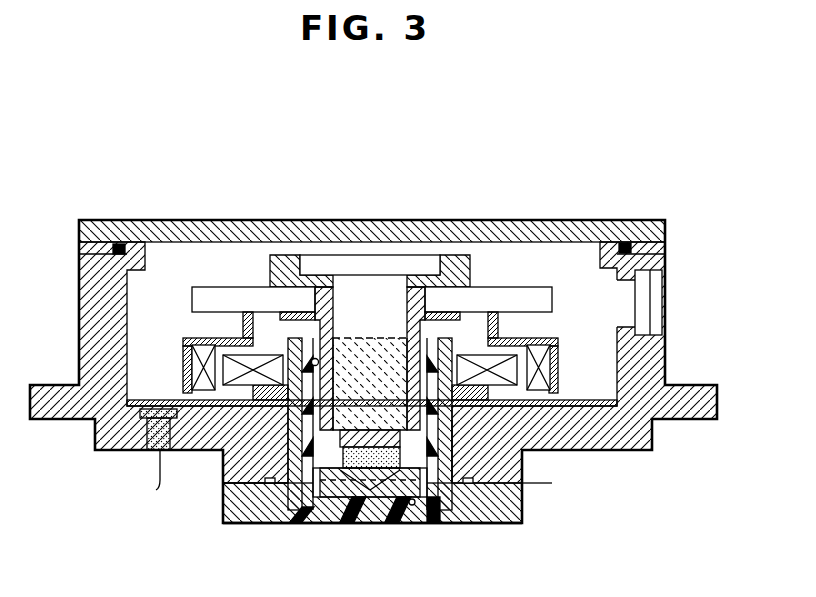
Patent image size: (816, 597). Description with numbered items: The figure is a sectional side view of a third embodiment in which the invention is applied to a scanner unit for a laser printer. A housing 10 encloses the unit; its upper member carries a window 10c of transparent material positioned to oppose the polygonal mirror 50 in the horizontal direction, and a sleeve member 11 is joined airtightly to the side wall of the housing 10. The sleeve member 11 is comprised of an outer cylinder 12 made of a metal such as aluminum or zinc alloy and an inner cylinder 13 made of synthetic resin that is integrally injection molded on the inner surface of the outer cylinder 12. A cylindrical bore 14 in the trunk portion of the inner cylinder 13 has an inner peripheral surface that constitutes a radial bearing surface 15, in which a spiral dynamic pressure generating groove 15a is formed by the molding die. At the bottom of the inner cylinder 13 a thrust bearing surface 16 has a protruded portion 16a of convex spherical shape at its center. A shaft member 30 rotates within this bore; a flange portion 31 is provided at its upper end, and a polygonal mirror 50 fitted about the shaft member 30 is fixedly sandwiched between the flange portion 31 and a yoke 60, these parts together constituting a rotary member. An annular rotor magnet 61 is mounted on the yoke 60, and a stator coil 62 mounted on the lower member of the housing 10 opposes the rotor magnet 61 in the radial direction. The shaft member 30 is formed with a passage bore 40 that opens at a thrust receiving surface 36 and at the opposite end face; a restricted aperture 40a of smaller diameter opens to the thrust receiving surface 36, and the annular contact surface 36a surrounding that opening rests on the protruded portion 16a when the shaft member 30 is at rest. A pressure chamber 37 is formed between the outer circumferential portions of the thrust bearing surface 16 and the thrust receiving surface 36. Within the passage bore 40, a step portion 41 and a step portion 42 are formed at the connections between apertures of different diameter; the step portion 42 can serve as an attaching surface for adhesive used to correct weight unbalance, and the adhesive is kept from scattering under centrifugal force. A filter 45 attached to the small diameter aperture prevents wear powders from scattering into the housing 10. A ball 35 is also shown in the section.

The housing 10 is at (169, 215).
The window 10c is at (643, 302).
The sleeve member 11 is at (575, 461).
The outer cylinder 12 is at (500, 448).
The inner cylinder 13 is at (503, 478).
The cylindrical bore 14 is at (427, 368).
The radial bearing surface 15 is at (280, 428).
The dynamic pressure generating groove 15a is at (282, 462).
The thrust bearing surface 16 is at (420, 497).
The protruded portion 16a is at (367, 497).
The shaft member 30 is at (351, 244).
The flange portion 31 is at (282, 262).
The ball 35 is at (320, 363).
The thrust receiving surface 36 is at (348, 500).
The contact surface 36a is at (410, 505).
The pressure chamber 37 is at (308, 505).
The passage bore 40 is at (408, 365).
The restricted aperture 40a is at (432, 505).
The step portion 41 is at (322, 274).
The step portion 42 is at (335, 428).
The filter 45 is at (440, 452).
The polygonal mirror 50 is at (195, 292).
The yoke 60 is at (195, 337).
The rotor magnet 61 is at (193, 360).
The stator coil 62 is at (227, 375).